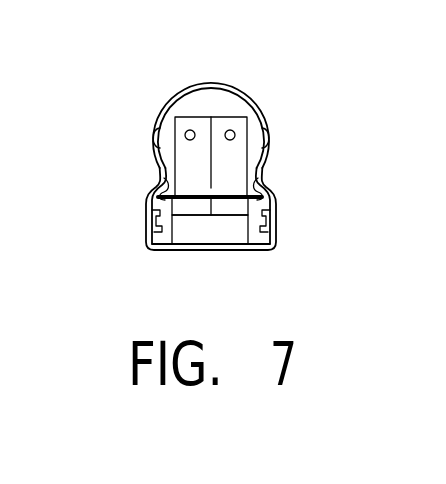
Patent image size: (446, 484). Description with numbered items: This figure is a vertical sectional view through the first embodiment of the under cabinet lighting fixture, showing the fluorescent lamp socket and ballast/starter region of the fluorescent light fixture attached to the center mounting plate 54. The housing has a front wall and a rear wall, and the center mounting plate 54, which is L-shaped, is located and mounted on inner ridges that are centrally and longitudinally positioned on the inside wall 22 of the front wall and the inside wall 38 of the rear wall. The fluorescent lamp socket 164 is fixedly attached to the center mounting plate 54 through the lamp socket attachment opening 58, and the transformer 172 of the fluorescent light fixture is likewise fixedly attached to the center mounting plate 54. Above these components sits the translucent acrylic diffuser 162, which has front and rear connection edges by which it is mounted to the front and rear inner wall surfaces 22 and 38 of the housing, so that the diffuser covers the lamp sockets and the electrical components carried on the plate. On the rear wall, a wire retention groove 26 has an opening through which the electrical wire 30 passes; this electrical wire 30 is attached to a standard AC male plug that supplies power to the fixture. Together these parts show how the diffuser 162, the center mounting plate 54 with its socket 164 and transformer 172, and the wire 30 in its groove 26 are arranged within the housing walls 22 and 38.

The translucent acrylic diffuser 162 is at (183, 88).
The fluorescent lamp socket 164 is at (185, 170).
The electrical wire 30 is at (147, 218).
The wire retention groove 26 is at (147, 235).
The inside wall 38 is at (164, 246).
The lamp socket attachment opening 58 is at (208, 207).
The transformer 172 is at (235, 233).
The inside wall 22 is at (270, 222).
The center mounting plate 54 is at (247, 203).